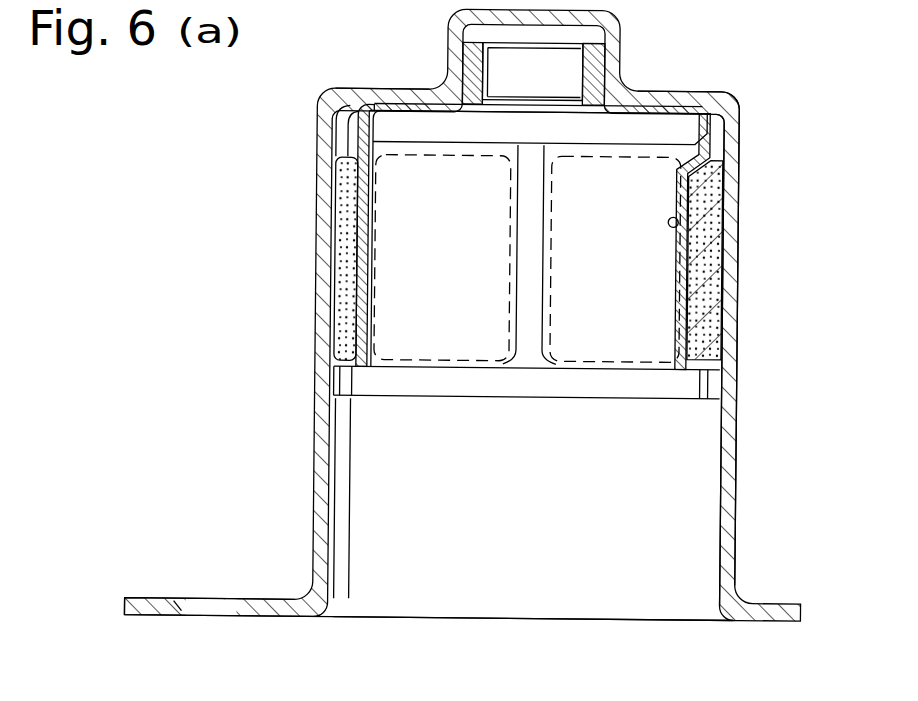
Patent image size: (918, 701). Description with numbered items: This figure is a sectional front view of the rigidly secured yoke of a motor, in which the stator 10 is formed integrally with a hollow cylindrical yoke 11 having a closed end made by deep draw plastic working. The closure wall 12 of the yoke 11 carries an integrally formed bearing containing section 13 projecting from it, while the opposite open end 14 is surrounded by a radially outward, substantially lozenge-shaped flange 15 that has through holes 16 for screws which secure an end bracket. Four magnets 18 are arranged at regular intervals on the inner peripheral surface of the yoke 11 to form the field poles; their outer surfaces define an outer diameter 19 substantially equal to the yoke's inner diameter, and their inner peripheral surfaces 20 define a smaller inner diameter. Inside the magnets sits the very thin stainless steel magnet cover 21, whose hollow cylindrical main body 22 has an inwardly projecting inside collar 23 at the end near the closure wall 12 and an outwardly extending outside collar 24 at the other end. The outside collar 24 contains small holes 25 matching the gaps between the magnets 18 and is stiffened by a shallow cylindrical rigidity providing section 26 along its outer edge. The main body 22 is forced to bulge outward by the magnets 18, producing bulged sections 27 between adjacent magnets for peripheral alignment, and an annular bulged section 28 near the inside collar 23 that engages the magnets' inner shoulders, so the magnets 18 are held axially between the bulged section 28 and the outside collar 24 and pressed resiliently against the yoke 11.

The stator 10 is at (216, 155).
The yoke 11 is at (312, 458).
The closure wall 12 is at (386, 89).
The bearing containing section 13 is at (620, 39).
The open end 14 is at (337, 607).
The flange 15 is at (273, 599).
The through holes 16 is at (176, 616).
The magnets 18 is at (351, 262).
The outer diameter 19 is at (736, 269).
The inner peripheral surfaces 20 is at (684, 221).
The magnet cover 21 is at (352, 209).
The main body 22 is at (683, 294).
The inside collar 23 is at (680, 102).
The outside collar 24 is at (708, 387).
The small holes 25 is at (356, 367).
The rigidity providing section 26 is at (520, 384).
The bulged sections 27 is at (372, 248).
The bulged section 28 is at (722, 125).